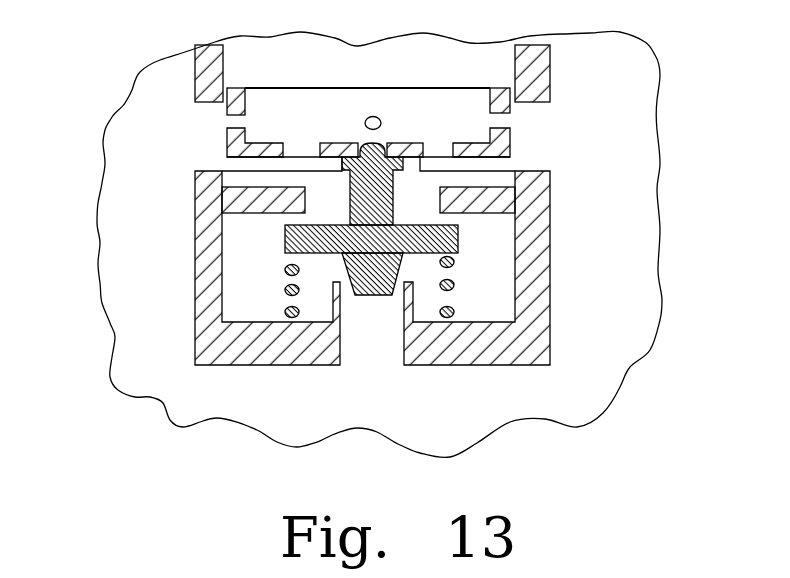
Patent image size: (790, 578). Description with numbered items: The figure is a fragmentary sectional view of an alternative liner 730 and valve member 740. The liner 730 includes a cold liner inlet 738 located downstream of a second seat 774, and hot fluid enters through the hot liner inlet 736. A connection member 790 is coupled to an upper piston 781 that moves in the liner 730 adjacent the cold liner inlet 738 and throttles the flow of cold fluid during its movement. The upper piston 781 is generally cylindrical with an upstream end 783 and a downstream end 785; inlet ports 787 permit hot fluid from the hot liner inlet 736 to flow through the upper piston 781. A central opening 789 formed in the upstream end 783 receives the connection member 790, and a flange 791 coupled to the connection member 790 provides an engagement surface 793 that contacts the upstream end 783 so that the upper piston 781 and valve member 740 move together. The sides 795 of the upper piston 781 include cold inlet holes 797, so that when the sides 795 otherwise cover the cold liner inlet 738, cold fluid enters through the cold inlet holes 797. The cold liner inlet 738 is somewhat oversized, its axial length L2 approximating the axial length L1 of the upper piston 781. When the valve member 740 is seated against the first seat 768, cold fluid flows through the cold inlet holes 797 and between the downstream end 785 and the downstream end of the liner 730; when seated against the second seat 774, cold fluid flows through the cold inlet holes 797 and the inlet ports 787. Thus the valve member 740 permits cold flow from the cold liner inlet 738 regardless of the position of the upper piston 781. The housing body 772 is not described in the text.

The liner 730 is at (413, 226).
The hot liner inlet 736 is at (357, 362).
The cold liner inlet 738 is at (542, 137).
The valve member 740 is at (457, 257).
The first seat 768 is at (413, 278).
The lower housing body 772 is at (463, 366).
The second seat 774 is at (477, 208).
The upper piston 781 is at (219, 141).
The upstream end 783 is at (235, 158).
The downstream end 785 is at (258, 70).
The inlet ports 787 is at (303, 152).
The central opening 789 is at (383, 138).
The connection member 790 is at (300, 222).
The flange 791 is at (400, 171).
The engagement surface 793 is at (292, 166).
The sides 795 is at (509, 147).
The cold inlet holes 797 is at (374, 116).
The axial length of upper piston L1 is at (292, 79).
The axial length of cold liner inlet L2 is at (203, 162).